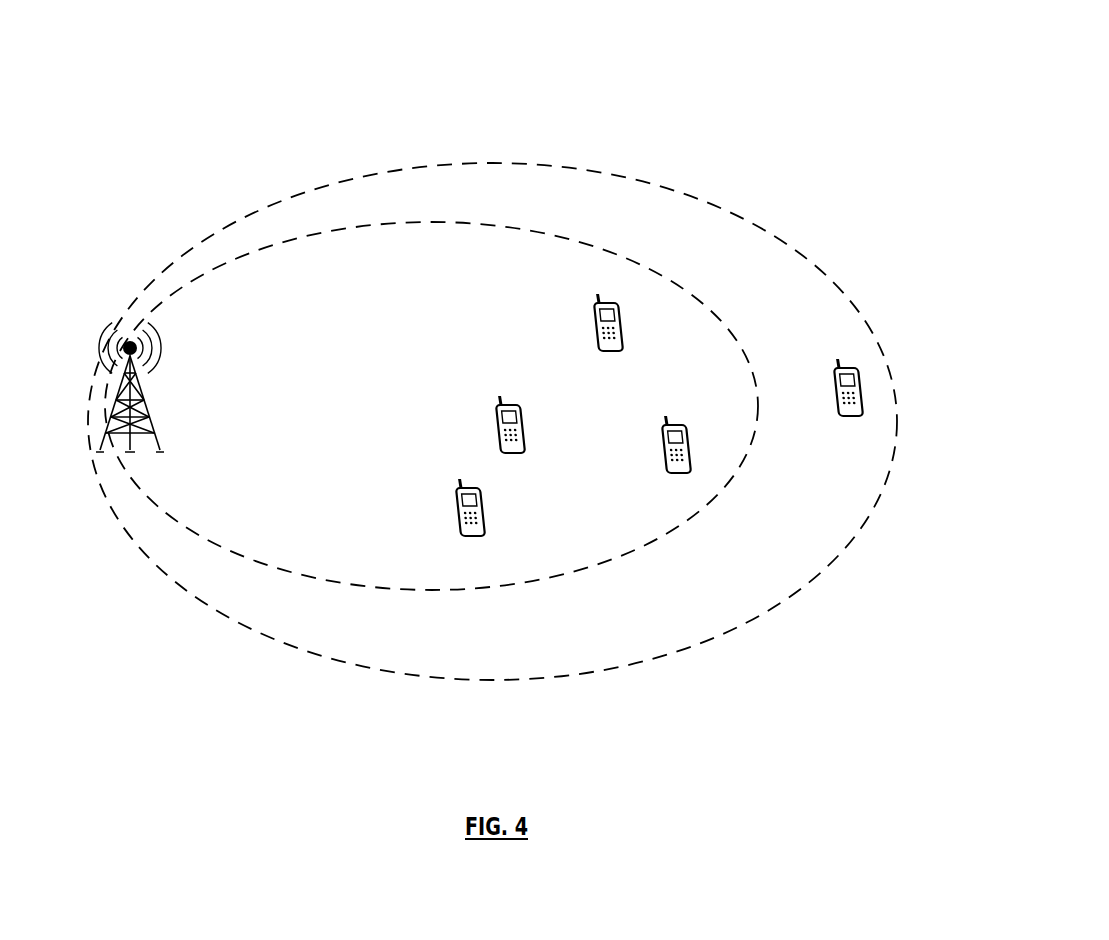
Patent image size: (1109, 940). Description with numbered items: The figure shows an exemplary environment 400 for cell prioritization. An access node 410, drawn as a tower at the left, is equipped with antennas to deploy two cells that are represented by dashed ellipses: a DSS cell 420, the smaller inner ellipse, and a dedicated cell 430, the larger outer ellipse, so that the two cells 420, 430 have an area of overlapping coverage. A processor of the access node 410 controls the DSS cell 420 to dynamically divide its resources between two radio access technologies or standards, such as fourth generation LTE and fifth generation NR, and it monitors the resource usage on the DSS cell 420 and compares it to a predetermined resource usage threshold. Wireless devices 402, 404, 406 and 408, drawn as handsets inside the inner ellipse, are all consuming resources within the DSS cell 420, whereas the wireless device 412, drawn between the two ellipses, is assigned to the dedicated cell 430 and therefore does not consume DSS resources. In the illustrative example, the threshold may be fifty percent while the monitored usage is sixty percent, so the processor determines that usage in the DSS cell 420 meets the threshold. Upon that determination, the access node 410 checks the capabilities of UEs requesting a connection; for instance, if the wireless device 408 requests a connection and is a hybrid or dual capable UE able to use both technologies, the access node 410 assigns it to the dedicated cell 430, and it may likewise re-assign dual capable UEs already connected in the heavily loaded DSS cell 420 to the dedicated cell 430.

The wireless communication system 400 is at (684, 78).
The wireless device 402 is at (475, 540).
The wireless device 404 is at (518, 422).
The wireless device 406 is at (682, 477).
The wireless device 408 is at (603, 353).
The access node 410 is at (147, 347).
The wireless device 412 is at (838, 413).
The DSS cell 420 is at (431, 406).
The dedicated cell 430 is at (492, 421).